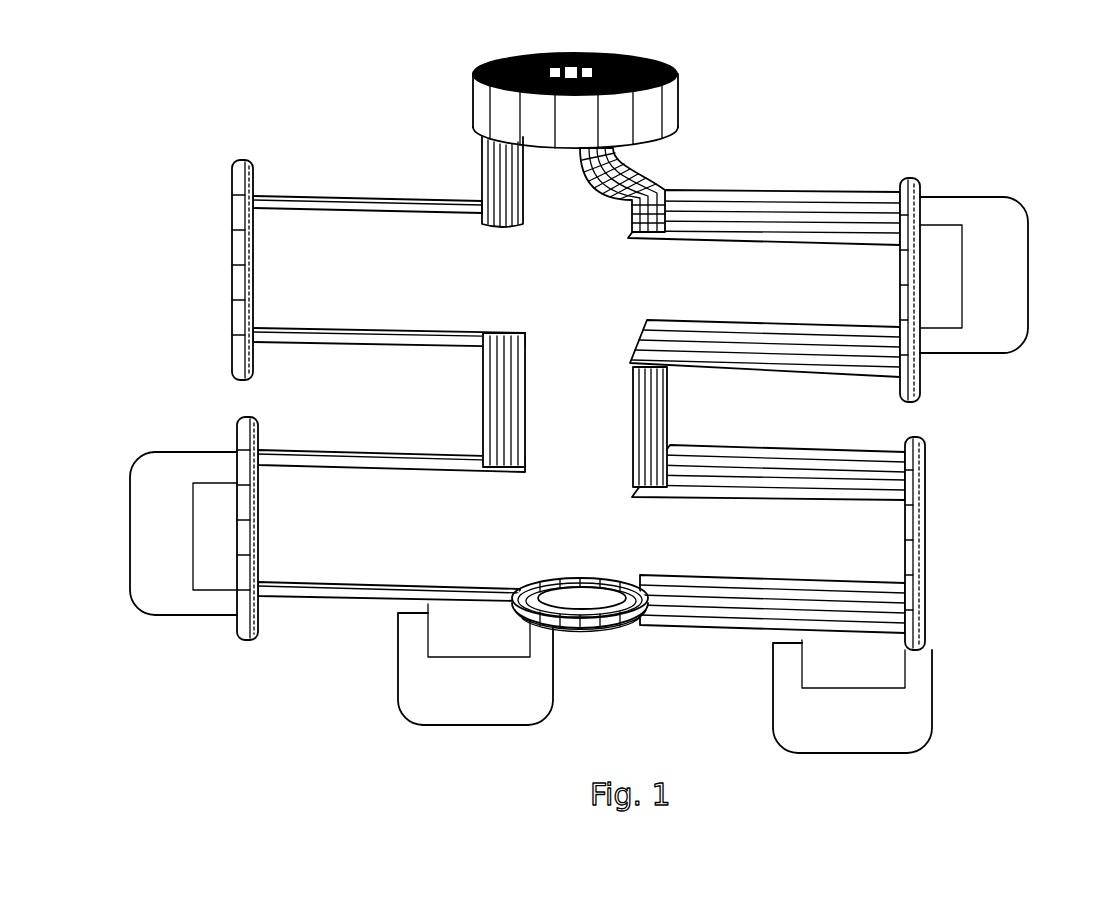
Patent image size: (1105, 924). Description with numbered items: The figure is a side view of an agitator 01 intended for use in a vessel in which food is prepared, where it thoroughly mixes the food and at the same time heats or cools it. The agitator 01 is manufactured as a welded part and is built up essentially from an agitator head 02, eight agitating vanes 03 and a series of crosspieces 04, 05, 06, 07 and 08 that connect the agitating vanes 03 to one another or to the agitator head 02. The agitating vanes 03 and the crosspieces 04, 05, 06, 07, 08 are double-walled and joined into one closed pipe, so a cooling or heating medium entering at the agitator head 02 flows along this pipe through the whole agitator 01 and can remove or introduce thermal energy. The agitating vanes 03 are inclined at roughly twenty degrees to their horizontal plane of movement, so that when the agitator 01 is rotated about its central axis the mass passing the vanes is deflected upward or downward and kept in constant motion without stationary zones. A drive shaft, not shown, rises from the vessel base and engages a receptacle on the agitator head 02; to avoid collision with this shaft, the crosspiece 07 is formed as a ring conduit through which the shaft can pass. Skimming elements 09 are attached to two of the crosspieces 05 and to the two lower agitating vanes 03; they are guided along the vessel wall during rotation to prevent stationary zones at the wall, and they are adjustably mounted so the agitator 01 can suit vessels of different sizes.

The agitator 01 is at (828, 105).
The agitator head 02 is at (672, 103).
The agitating vanes 03 is at (345, 198).
The crosspiece 04 is at (650, 180).
The crosspiece 05 is at (253, 253).
The crosspiece 06 is at (490, 374).
The crosspiece 07 is at (603, 632).
The crosspiece 08 is at (482, 178).
The skimming elements 09 is at (1010, 270).